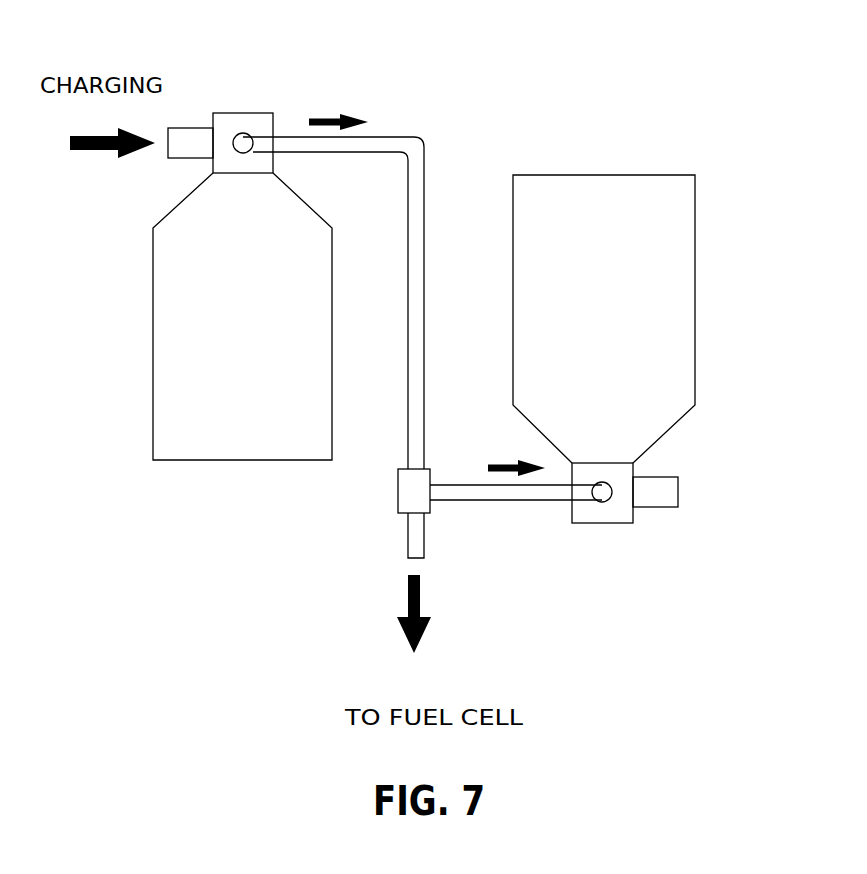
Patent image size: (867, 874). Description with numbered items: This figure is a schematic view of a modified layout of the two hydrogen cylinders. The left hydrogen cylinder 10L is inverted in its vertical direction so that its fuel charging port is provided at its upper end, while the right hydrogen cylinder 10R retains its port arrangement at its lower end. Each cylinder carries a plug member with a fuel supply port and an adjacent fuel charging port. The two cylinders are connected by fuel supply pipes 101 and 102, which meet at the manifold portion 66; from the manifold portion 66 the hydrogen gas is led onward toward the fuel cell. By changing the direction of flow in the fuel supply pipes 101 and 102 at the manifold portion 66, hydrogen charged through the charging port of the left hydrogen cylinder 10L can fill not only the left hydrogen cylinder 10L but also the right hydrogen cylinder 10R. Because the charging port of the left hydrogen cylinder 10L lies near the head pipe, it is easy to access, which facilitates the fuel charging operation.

The left hydrogen cylinder 10L is at (180, 333).
The right hydrogen cylinder 10R is at (667, 337).
The fuel supply pipe 101 is at (392, 147).
The fuel supply pipe 102 is at (487, 492).
The manifold portion 66 is at (410, 492).